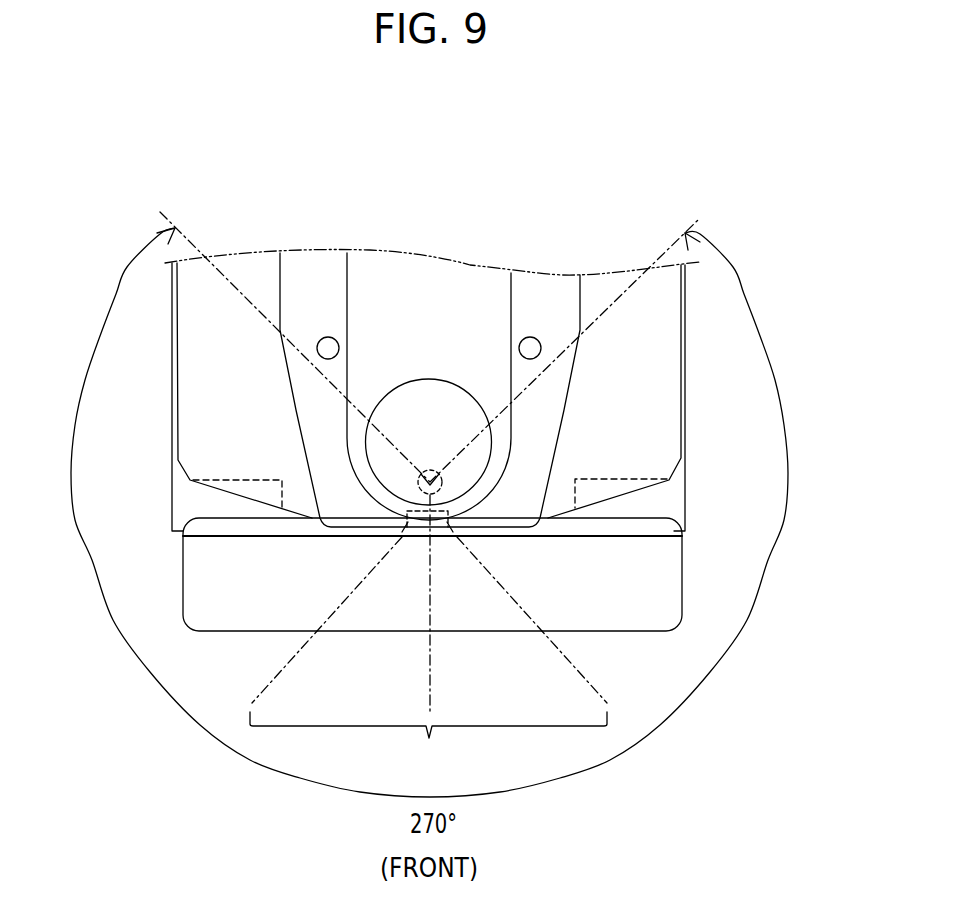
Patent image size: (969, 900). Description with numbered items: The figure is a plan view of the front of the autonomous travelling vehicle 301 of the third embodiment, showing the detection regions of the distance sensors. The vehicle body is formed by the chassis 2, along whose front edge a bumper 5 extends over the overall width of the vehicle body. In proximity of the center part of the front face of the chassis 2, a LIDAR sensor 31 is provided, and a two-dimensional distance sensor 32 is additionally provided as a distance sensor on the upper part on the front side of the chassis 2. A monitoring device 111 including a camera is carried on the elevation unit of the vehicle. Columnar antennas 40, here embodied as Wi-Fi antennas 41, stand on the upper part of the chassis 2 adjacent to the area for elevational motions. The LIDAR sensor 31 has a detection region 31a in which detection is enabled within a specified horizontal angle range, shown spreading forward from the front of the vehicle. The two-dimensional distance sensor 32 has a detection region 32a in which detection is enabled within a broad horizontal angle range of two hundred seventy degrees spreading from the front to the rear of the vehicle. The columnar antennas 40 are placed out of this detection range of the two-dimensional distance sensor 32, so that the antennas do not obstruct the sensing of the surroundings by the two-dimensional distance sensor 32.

The autonomous travelling vehicle 301 is at (456, 254).
The chassis 2 is at (687, 391).
The bumper 5 is at (667, 575).
The monitoring device 111 is at (417, 400).
The Wi-Fi antennas 41 is at (323, 336).
The columnar antennas 40 is at (439, 261).
The 2D distance sensor 32 is at (430, 470).
The detection region 32a is at (663, 690).
The LIDAR sensor 31 is at (427, 537).
The detection region 31a is at (428, 744).